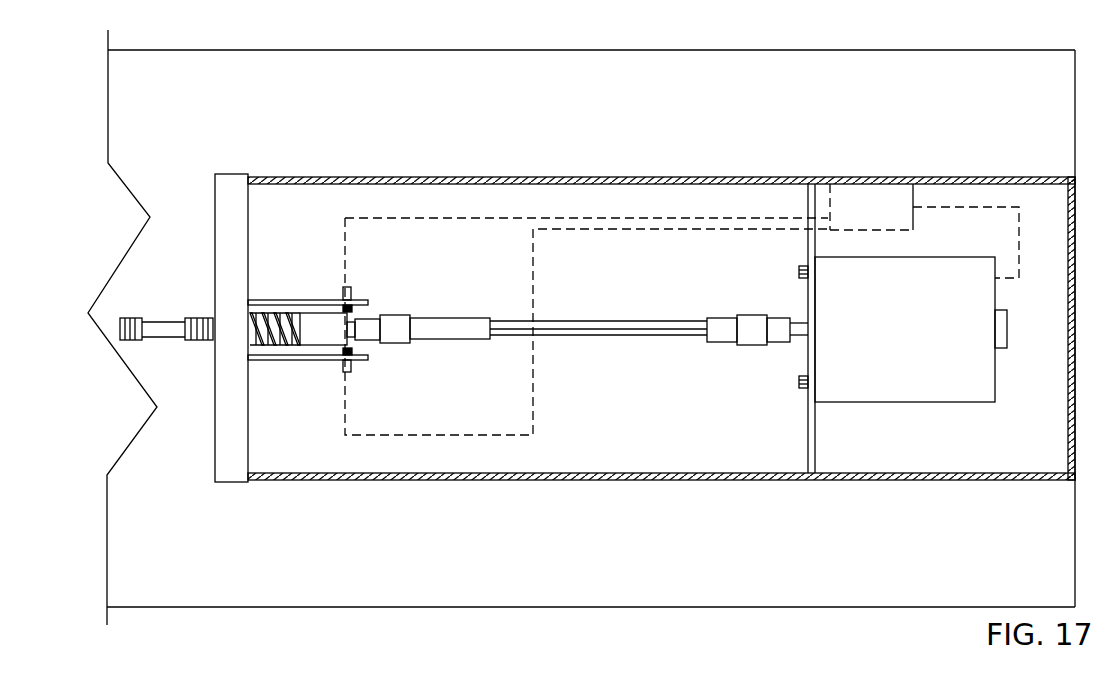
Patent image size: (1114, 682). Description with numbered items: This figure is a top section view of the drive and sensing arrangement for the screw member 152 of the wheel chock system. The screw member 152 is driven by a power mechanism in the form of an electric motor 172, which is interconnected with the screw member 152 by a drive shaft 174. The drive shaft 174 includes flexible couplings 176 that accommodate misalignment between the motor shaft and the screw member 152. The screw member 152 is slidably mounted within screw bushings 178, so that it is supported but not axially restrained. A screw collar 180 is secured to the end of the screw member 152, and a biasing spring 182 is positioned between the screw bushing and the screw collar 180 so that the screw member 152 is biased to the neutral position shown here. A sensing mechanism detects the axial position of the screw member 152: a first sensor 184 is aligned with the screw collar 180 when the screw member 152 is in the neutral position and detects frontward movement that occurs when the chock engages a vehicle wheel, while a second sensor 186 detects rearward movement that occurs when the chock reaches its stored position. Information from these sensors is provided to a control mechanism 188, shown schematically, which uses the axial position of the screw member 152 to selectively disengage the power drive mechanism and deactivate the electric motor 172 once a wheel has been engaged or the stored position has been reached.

The screw member 152 is at (180, 328).
The electric motor 172 is at (962, 266).
The drive shaft 174 is at (614, 323).
The flexible couplings 176 is at (400, 332).
The screw bushings 178 is at (254, 345).
The screw collar 180 is at (320, 320).
The biasing spring 182 is at (280, 346).
The first sensor 184 is at (352, 293).
The second sensor 186 is at (352, 367).
The control mechanism 188 is at (870, 190).